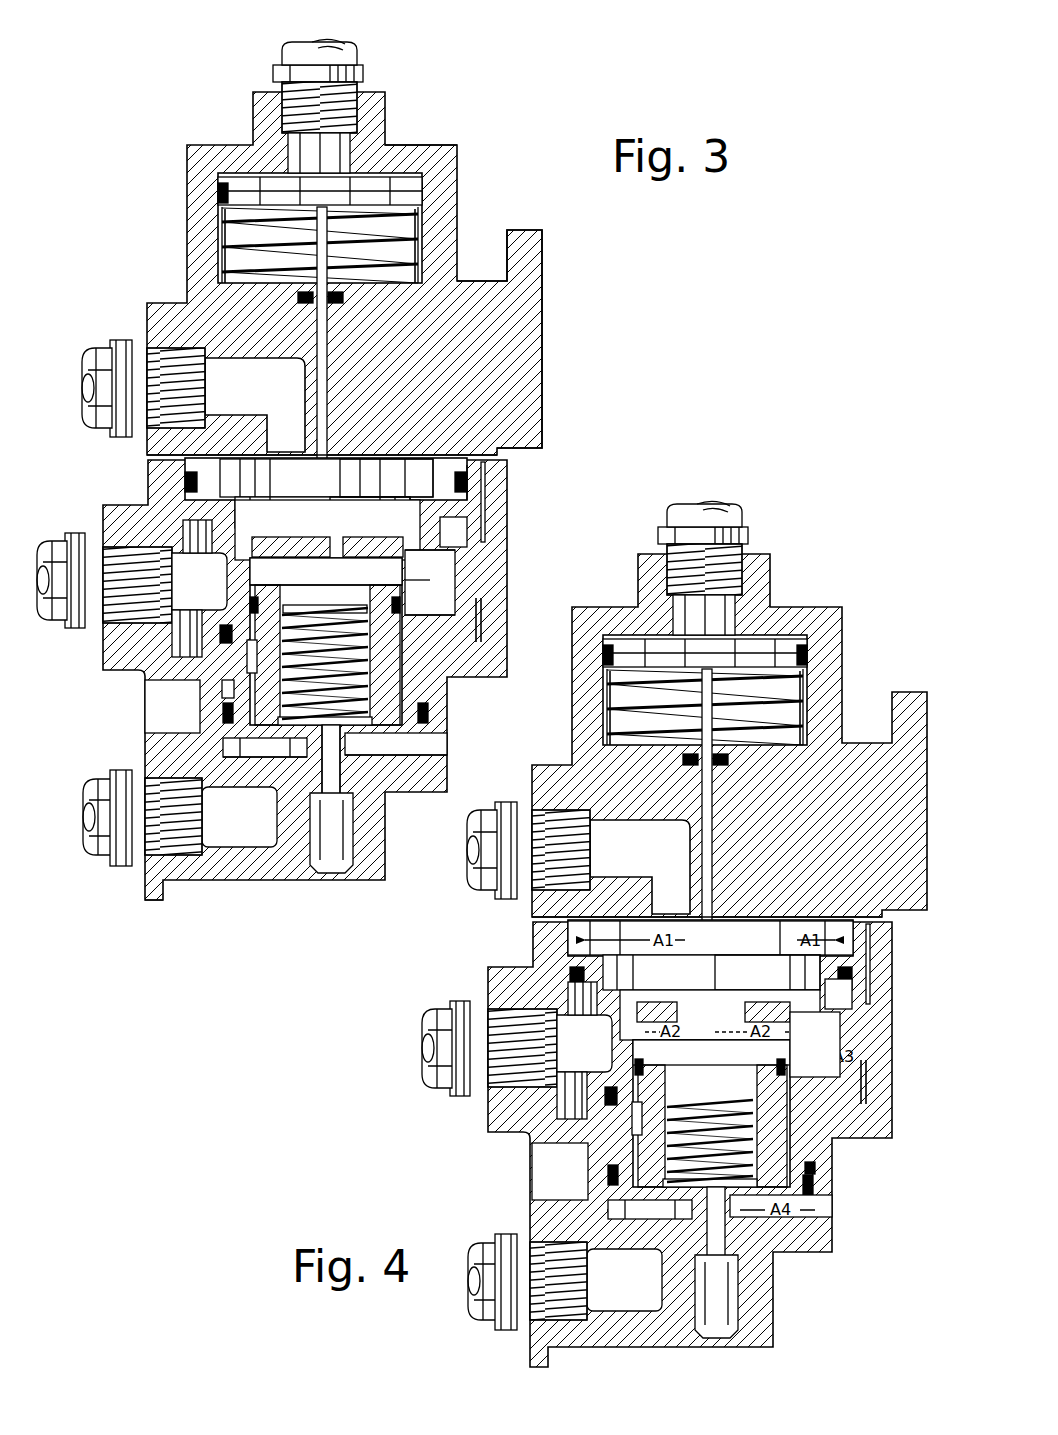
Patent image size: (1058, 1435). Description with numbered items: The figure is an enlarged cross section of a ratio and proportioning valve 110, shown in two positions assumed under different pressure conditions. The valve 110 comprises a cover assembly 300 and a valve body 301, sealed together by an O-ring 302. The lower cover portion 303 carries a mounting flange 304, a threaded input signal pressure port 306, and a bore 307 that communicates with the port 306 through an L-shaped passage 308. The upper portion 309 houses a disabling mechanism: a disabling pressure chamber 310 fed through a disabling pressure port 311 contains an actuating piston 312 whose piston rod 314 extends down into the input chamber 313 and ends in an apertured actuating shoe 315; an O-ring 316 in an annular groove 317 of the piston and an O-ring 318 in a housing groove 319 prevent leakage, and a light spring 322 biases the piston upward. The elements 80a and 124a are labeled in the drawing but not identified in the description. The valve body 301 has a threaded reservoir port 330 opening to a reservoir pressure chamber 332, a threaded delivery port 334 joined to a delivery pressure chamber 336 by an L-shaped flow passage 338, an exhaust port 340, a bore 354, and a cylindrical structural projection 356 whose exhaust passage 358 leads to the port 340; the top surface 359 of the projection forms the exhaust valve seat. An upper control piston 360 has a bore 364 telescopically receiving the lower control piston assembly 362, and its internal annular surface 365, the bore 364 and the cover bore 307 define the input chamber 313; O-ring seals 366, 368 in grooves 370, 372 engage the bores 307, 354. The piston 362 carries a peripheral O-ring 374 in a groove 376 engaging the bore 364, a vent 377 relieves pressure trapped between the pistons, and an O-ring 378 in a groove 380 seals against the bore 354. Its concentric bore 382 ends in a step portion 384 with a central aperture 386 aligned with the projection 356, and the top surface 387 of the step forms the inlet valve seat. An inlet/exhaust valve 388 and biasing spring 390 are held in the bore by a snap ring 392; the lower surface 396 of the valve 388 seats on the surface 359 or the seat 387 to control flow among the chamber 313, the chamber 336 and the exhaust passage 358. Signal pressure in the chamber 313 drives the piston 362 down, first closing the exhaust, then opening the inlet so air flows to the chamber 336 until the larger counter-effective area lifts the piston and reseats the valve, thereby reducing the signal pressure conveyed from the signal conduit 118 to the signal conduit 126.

In FIG. 3, the adjusting screw 80a is at (357, 50).
In FIG. 4, the adjusting screw 80a is at (746, 560).
In FIG. 3, the disabling pressure port 311 is at (360, 82).
In FIG. 4, the disabling pressure port 311 is at (751, 534).
In FIG. 3, the annular groove 317 is at (440, 149).
In FIG. 3, the O-ring 316 is at (422, 190).
In FIG. 3, the upper portion 309 is at (187, 196).
In FIG. 3, the actuating piston 312 is at (320, 191).
In FIG. 4, the actuating piston 312 is at (698, 615).
In FIG. 3, the spring 322 is at (232, 226).
In FIG. 4, the spring 322 is at (662, 708).
In FIG. 3, the disabling pressure chamber 310 is at (320, 245).
In FIG. 4, the disabling pressure chamber 310 is at (757, 688).
In FIG. 3, the cover assembly 300 is at (550, 262).
In FIG. 3, the housing groove 319 is at (298, 297).
In FIG. 3, the O-ring 318 is at (344, 300).
In FIG. 3, the cover portion 303 is at (548, 312).
In FIG. 3, the input signal pressure port 306 is at (150, 372).
In FIG. 4, the input signal pressure port 306 is at (533, 831).
In FIG. 3, the mounting flange 304 is at (530, 357).
In FIG. 3, the piston rod 314 is at (328, 350).
In FIG. 4, the piston rod 314 is at (747, 829).
In FIG. 3, the signal conduit 118 is at (97, 390).
In FIG. 4, the signal conduit 118 is at (461, 868).
In FIG. 3, the L-shaped passage 308 is at (282, 396).
In FIG. 4, the L-shaped passage 308 is at (640, 867).
In FIG. 3, the O-ring 302 is at (150, 458).
In FIG. 3, the input chamber 313 is at (326, 493).
In FIG. 4, the input chamber 313 is at (710, 955).
In FIG. 3, the internal annular surface 365 is at (402, 492).
In FIG. 3, the O-ring seal 366 is at (470, 482).
In FIG. 3, the piston groove 370 is at (470, 492).
In FIG. 3, the actuating shoe 315 is at (336, 528).
In FIG. 4, the actuating shoe 315 is at (767, 972).
In FIG. 3, the upper control piston 360 is at (455, 496).
In FIG. 4, the upper control piston 360 is at (713, 991).
In FIG. 3, the bore 307 is at (488, 520).
In FIG. 3, the reservoir port 330 is at (108, 542).
In FIG. 4, the reservoir port 330 is at (490, 1031).
In FIG. 3, the valve body 301 is at (514, 554).
In FIG. 3, the reservoir pressure chamber 332 is at (215, 590).
In FIG. 3, the snap ring 392 is at (326, 572).
In FIG. 3, the concentric bore 382 is at (326, 640).
In FIG. 4, the concentric bore 382 is at (711, 1113).
In FIG. 3, the bore 364 is at (420, 560).
In FIG. 3, the bore 354 is at (240, 650).
In FIG. 3, the groove 376 is at (425, 580).
In FIG. 3, the biasing spring 390 is at (328, 622).
In FIG. 3, the peripheral O-ring 374 is at (430, 596).
In FIG. 3, the piston groove 372 is at (482, 626).
In FIG. 3, the fitting head 124a is at (62, 628).
In FIG. 4, the fitting head 124a is at (438, 1078).
In FIG. 3, the O-ring seal 368 is at (482, 646).
In FIG. 3, the piston groove 380 is at (150, 690).
In FIG. 3, the O-ring 378 is at (222, 712).
In FIG. 3, the lower control piston assembly 362 is at (405, 706).
In FIG. 4, the lower control piston assembly 362 is at (709, 1125).
In FIG. 3, the lower surface 396 is at (420, 744).
In FIG. 4, the lower surface 396 is at (809, 1196).
In FIG. 3, the inlet/exhaust valve 388 is at (245, 738).
In FIG. 3, the delivery pressure chamber 336 is at (280, 764).
In FIG. 4, the delivery pressure chamber 336 is at (646, 1238).
In FIG. 3, the aperture 386 is at (420, 762).
In FIG. 3, the step portion 384 is at (264, 772).
In FIG. 3, the cylindrical structural projection 356 is at (345, 762).
In FIG. 3, the L-shaped flow passage 338 is at (256, 835).
In FIG. 4, the L-shaped flow passage 338 is at (624, 1280).
In FIG. 3, the exhaust port 340 is at (348, 849).
In FIG. 4, the exhaust port 340 is at (717, 1296).
In FIG. 3, the exhaust passage 358 is at (342, 792).
In FIG. 4, the exhaust passage 358 is at (774, 1236).
In FIG. 3, the signal conduit 126 is at (88, 848).
In FIG. 4, the signal conduit 126 is at (513, 1263).
In FIG. 3, the delivery port 334 is at (130, 868).
In FIG. 4, the delivery port 334 is at (481, 1296).
In FIG. 3, the ratio and proportioning valve 110 is at (295, 958).
In FIG. 4, the vent 377 is at (534, 1171).
In FIG. 4, the top surface 387 is at (575, 1181).
In FIG. 4, the top surface 359 is at (847, 1169).